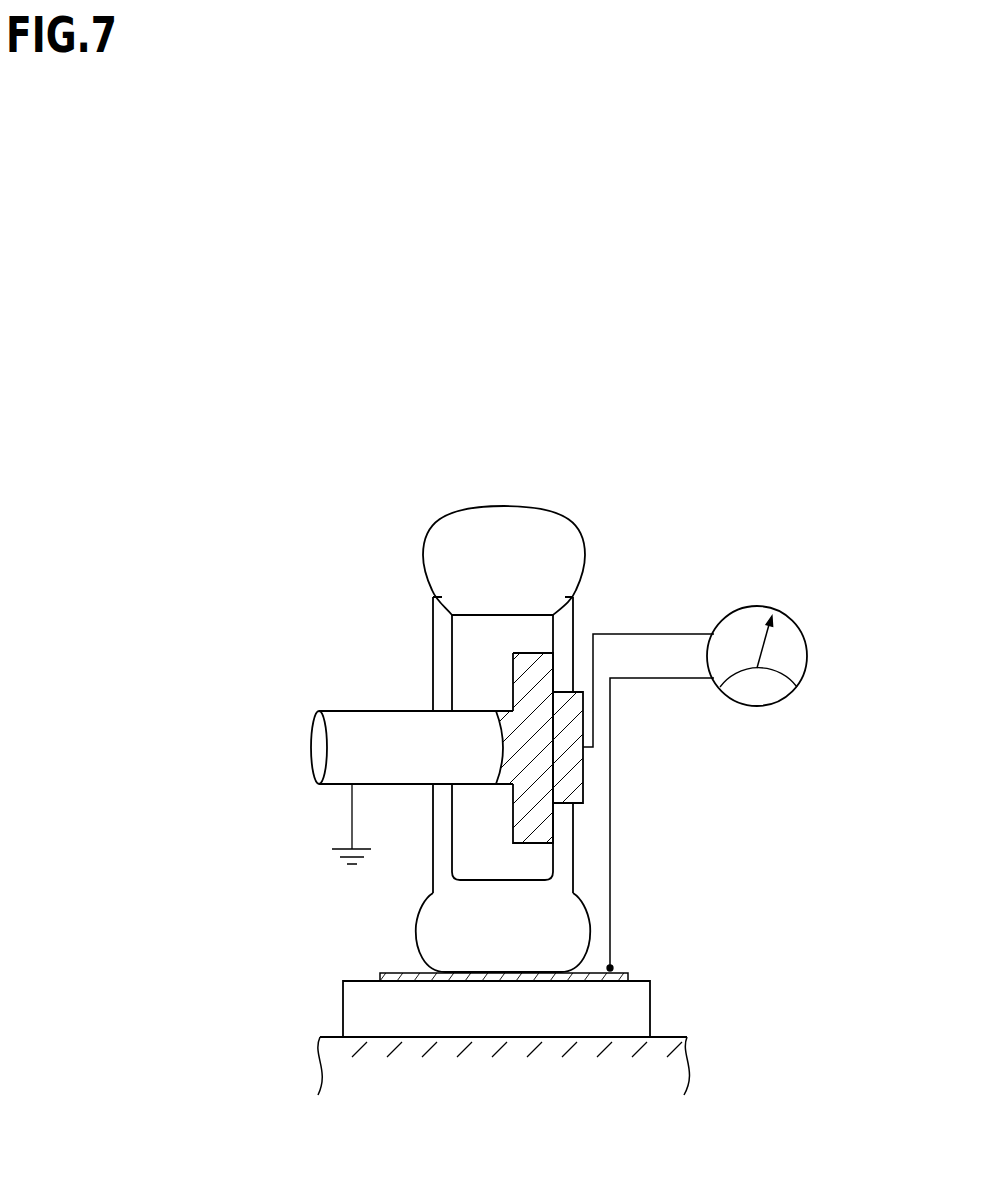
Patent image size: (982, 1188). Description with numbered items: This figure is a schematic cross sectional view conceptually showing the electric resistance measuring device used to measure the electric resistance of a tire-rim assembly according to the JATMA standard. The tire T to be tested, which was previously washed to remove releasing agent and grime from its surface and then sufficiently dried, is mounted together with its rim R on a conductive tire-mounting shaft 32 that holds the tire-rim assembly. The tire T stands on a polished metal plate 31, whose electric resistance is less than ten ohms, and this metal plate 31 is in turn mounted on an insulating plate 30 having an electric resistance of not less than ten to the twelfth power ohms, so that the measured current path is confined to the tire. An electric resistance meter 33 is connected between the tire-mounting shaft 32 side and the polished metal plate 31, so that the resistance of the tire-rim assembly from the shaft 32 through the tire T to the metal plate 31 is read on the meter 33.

The tire T is at (558, 543).
The resin layer R is at (437, 630).
The conductive tire-mounting shaft 32 is at (370, 719).
The electric resistance meter 33 is at (808, 637).
The polished metal plate 31 is at (408, 972).
The insulating plate 30 is at (363, 1012).